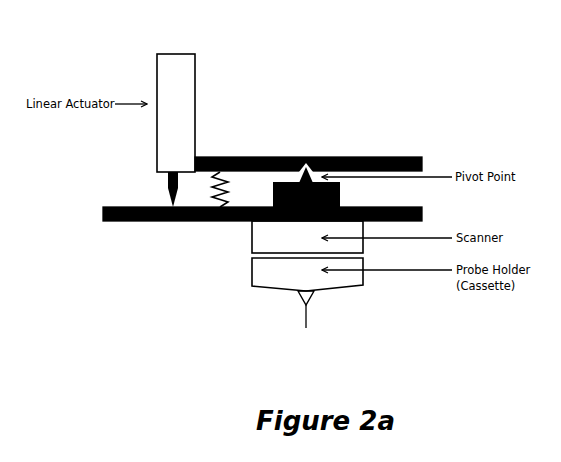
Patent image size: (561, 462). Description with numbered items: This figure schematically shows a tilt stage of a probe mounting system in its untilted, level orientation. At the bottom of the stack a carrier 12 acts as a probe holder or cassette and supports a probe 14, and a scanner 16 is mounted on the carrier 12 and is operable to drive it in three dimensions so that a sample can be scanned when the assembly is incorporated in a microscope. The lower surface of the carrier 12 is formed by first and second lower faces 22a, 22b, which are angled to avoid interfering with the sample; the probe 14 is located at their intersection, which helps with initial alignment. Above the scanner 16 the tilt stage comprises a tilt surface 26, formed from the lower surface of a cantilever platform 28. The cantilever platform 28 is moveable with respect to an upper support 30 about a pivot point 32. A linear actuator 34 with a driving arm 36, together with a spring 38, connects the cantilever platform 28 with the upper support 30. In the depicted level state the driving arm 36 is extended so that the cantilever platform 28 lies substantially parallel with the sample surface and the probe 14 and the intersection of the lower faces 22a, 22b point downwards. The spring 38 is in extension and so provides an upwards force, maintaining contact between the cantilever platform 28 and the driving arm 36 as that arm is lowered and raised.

The carrier 12 is at (260, 272).
The probe 14 is at (306, 323).
The scanner 16 is at (260, 239).
The first lower face 22a is at (272, 293).
The second lower face 22b is at (337, 292).
The tilt surface 26 is at (157, 221).
The cantilever platform 28 is at (423, 212).
The upper support 30 is at (413, 157).
The pivot point 32 is at (310, 157).
The linear actuator 34 is at (177, 64).
The driving arm 36 is at (168, 187).
The spring 38 is at (215, 158).